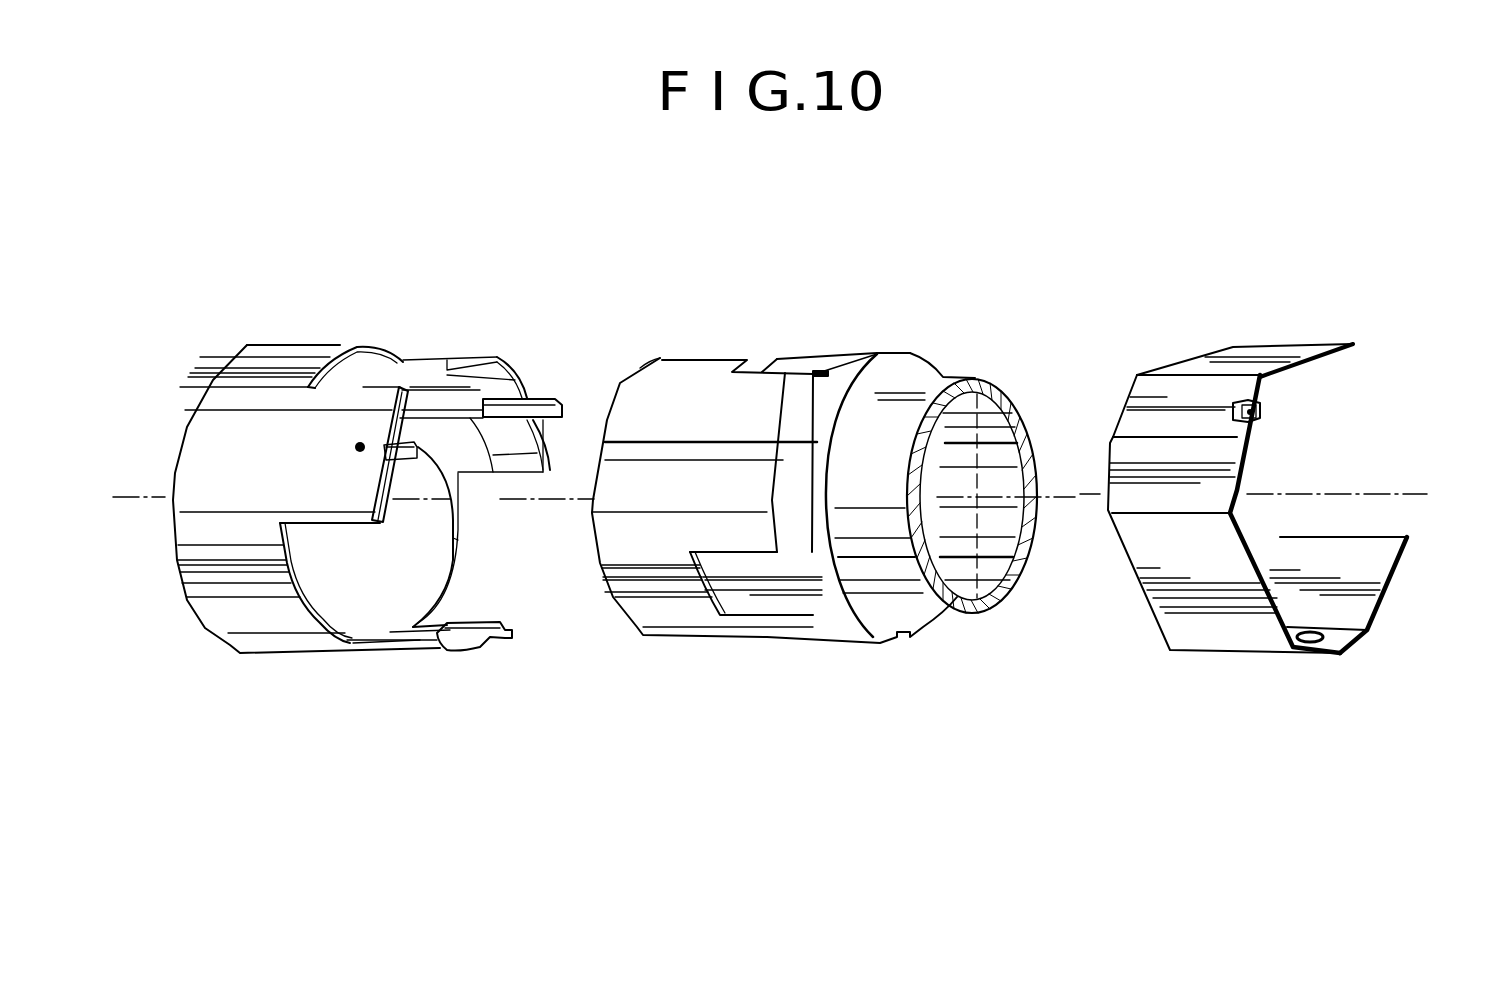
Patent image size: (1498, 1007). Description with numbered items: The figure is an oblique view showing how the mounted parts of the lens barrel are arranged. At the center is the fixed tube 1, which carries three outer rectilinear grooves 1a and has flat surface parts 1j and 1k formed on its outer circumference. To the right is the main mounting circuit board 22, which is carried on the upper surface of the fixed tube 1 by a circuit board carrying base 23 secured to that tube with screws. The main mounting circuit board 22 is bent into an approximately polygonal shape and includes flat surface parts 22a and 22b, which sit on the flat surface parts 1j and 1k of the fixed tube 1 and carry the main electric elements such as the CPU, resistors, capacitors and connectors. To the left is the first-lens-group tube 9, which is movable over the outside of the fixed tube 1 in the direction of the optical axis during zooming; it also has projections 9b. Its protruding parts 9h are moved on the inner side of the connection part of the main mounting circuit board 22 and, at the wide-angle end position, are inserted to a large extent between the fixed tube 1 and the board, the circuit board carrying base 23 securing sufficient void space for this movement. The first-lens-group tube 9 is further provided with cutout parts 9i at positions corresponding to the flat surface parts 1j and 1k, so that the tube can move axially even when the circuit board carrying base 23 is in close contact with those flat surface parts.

The first-lens-group tube 9 is at (267, 613).
The projection of sleeve 9b is at (453, 538).
The protruding parts 9h is at (390, 408).
The cutout parts 9i is at (400, 352).
The fixed tube 1 is at (687, 613).
The outer rectilinear grooves 1a is at (703, 447).
The flat surface part 1j is at (825, 370).
The flat surface part 1k is at (770, 603).
The main mounting circuit board 22 is at (1300, 347).
The flat surface part 22a is at (1220, 362).
The flat surface part 22b is at (1213, 623).
The circuit board carrying base 23 is at (1260, 413).